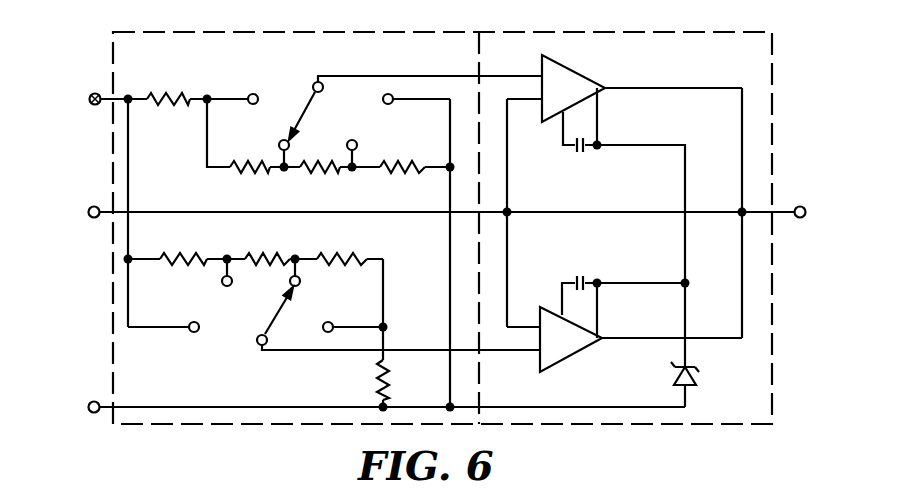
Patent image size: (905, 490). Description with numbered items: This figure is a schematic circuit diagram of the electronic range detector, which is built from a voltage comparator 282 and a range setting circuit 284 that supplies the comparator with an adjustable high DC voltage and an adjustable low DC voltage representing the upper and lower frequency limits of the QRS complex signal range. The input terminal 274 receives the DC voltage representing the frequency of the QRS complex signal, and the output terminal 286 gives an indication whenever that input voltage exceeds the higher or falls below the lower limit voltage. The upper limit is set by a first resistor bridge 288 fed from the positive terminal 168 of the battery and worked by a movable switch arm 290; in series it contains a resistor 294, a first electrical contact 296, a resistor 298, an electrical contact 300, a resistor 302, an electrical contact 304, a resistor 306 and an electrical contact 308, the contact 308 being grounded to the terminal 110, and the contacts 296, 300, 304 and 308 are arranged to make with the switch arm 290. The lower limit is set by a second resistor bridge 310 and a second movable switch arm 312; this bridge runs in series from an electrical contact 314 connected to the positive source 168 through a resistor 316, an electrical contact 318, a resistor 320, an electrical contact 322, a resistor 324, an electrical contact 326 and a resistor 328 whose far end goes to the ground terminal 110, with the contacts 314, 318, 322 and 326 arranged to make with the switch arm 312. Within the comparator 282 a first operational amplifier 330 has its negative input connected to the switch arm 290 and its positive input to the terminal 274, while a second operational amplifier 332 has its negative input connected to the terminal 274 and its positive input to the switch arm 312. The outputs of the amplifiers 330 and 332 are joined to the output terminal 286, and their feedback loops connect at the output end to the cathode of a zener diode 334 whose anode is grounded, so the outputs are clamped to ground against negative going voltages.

The ground terminal 110 is at (90, 402).
The positive terminal 168 is at (90, 93).
The input terminal 274 is at (90, 206).
The voltage comparator 282 is at (729, 31).
The range setting circuit 284 is at (391, 40).
The output terminal 286 is at (800, 206).
The first resistor bridge 288 is at (276, 72).
The movable switch arm 290 is at (311, 106).
The 21K resistor 294 is at (180, 93).
The first electrical contact 296 is at (205, 106).
The 4.99K resistor 298 is at (247, 176).
The electrical contact 300 is at (279, 147).
The 4.75K resistor 302 is at (320, 175).
The electrical contact 304 is at (358, 146).
The 18.2K resistor 306 is at (397, 176).
The electrical contact 308 is at (391, 105).
The second resistor bridge 310 is at (227, 346).
The second movable switch arm 312 is at (267, 338).
The electrical contact 314 is at (194, 333).
The 11.8K resistor 316 is at (190, 249).
The electrical contact 318 is at (222, 281).
The 1.82K resistor 320 is at (283, 249).
The electrical contact 322 is at (302, 282).
The 1.82K resistor 324 is at (343, 250).
The electrical contact 326 is at (330, 321).
The 32.4K resistor 328 is at (392, 372).
The first operational amplifier 330 is at (580, 62).
The second operational amplifier 332 is at (570, 360).
The zener diode 334 is at (698, 375).